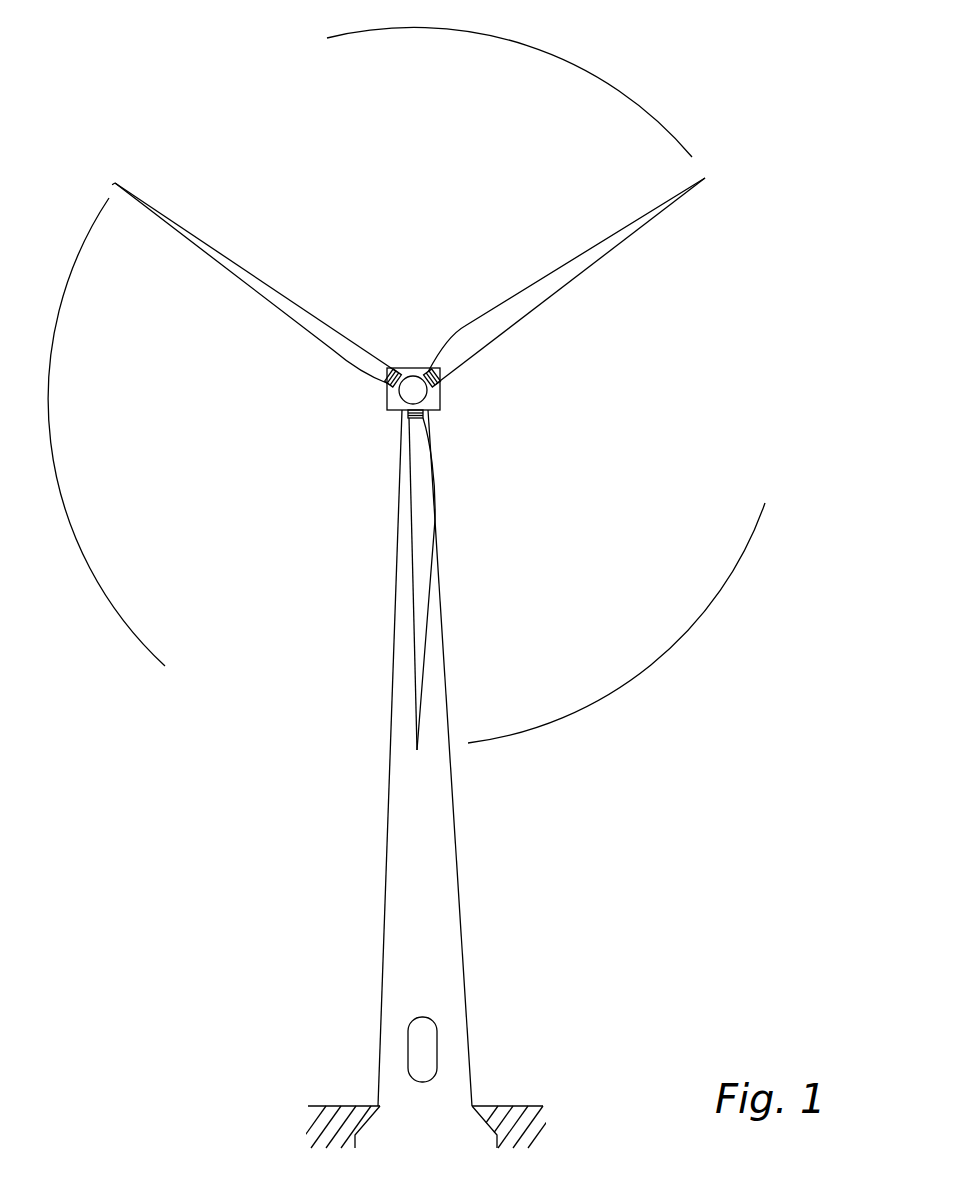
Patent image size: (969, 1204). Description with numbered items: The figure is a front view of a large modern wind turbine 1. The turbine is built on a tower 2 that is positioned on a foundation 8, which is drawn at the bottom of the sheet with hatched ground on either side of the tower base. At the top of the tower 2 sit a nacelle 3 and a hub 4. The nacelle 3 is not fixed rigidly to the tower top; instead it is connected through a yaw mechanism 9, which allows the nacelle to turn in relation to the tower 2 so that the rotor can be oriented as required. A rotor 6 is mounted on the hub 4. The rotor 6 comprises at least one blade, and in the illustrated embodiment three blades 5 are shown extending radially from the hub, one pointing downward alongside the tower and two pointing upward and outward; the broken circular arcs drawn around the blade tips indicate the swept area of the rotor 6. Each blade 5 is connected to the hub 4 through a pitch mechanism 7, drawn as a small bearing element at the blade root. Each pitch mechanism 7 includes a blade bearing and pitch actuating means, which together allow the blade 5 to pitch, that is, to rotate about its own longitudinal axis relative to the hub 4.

The wind turbine 1 is at (371, 937).
The tower 2 is at (447, 832).
The nacelle 3 is at (440, 410).
The hub 4 is at (412, 383).
The blades 5 is at (427, 618).
The rotor 6 is at (668, 612).
The pitch mechanisms 7 is at (387, 388).
The foundation 8 is at (360, 1132).
The yaw mechanism 9 is at (401, 416).